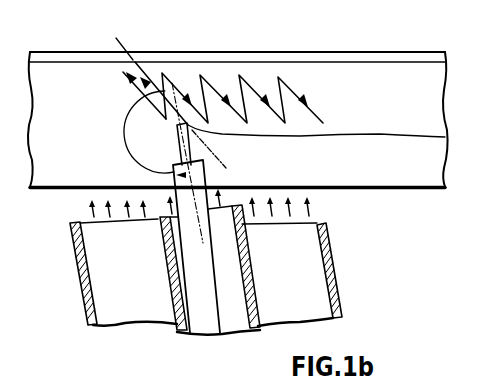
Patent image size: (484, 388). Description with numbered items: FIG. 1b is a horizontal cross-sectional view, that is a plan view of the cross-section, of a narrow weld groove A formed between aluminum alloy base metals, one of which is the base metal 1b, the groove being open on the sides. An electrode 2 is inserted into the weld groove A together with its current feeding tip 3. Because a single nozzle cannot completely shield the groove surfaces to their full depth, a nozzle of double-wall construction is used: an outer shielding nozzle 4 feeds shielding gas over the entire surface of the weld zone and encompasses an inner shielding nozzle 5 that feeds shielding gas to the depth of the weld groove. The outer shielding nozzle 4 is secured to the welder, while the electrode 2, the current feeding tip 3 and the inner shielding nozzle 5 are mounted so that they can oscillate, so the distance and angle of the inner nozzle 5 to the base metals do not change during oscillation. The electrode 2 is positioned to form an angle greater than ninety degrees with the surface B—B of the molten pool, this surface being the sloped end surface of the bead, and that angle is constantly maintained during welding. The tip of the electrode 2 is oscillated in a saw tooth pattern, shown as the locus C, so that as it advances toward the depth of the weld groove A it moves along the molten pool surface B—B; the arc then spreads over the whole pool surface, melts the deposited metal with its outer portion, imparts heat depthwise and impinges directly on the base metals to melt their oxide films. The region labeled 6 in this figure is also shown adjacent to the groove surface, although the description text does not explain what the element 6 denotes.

The aluminum alloy base metal 1b is at (55, 82).
The weld groove A is at (83, 68).
The surface of the molten pool B is at (177, 99).
The saw tooth oscillation pattern C is at (287, 84).
The plate body 6 is at (349, 75).
The electrode 2 is at (177, 140).
The current feeding tip 3 is at (211, 273).
The inner shielding nozzle 5 is at (255, 307).
The outer shielding nozzle 4 is at (338, 303).